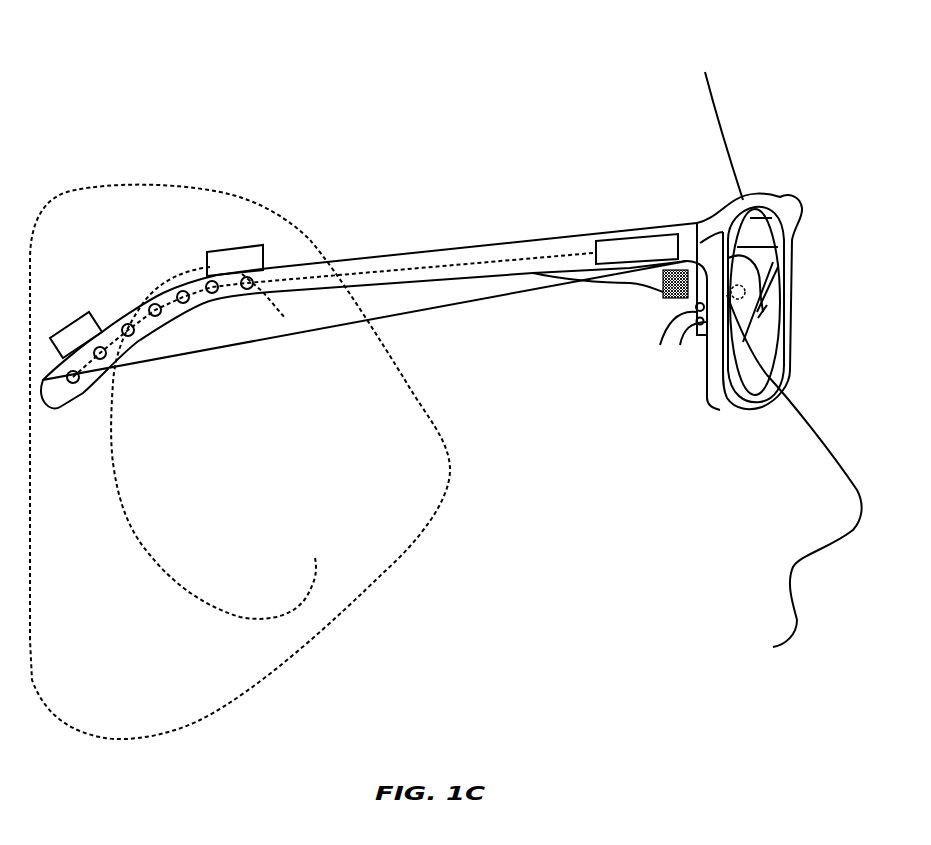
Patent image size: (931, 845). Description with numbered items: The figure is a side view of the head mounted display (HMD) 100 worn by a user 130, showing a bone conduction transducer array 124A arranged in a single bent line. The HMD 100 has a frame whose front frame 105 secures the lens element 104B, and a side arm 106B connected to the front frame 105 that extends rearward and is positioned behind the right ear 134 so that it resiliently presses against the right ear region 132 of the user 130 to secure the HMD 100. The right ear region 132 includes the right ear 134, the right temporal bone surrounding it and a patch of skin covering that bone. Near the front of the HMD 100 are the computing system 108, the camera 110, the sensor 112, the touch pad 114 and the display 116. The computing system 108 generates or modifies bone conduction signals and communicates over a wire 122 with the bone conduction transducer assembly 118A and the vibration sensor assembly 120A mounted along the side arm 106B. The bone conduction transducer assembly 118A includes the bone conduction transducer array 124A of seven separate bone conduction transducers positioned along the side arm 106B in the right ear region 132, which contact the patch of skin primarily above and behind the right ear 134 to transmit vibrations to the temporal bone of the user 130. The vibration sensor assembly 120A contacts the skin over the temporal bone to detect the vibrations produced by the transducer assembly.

The head mounted display (HMD) 100 is at (560, 221).
The left lens element 104B is at (752, 400).
The front frame 105 is at (780, 313).
The left side arm 106B is at (80, 398).
The computing system 108 is at (636, 239).
The camera 110 is at (667, 330).
The sensor 112 is at (695, 321).
The touch pad 114 is at (663, 288).
The display 116 is at (765, 213).
The right bone conduction transducer assembly 118A is at (230, 246).
The right vibration sensor assembly 120A is at (63, 320).
The wire 122 is at (393, 268).
The bone conduction transducer array 124A is at (115, 310).
The user 130 is at (697, 98).
The right ear region 132 is at (347, 525).
The right ear 134 is at (206, 447).